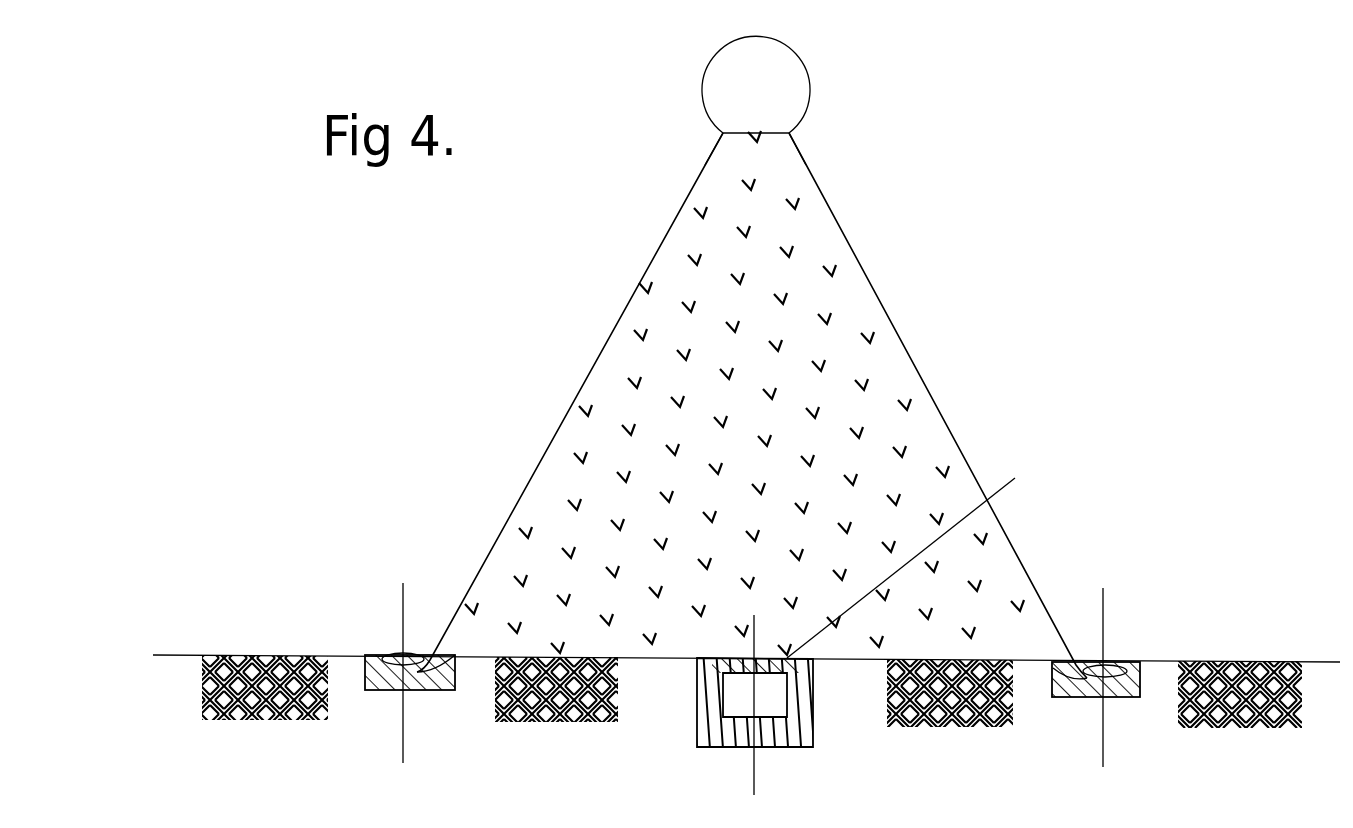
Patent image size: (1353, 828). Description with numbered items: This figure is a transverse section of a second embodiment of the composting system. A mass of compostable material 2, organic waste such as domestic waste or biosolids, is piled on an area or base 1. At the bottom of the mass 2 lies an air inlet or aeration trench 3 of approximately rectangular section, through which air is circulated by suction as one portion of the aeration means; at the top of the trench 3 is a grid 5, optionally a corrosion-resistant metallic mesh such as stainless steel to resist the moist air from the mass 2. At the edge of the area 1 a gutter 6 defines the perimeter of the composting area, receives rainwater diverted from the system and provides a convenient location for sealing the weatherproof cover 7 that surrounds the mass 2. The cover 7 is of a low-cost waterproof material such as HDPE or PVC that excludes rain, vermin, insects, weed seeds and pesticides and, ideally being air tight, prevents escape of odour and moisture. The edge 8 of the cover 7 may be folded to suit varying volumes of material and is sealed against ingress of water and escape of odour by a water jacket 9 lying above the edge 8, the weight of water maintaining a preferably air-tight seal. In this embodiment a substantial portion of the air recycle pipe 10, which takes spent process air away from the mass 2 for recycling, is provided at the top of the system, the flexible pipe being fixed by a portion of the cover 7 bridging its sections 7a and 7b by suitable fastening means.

The base 1 is at (190, 655).
The mass of compostable material 2 is at (777, 367).
The aeration trench 3 is at (777, 703).
The grid 5 is at (912, 553).
The gutter 6 is at (417, 672).
The weatherproof cover 7 is at (572, 402).
The cover section 7a is at (710, 158).
The cover section 7b is at (797, 157).
The edge of the cover 8 is at (400, 660).
The water jacket 9 is at (418, 670).
The air recycle pipe 10 is at (782, 77).